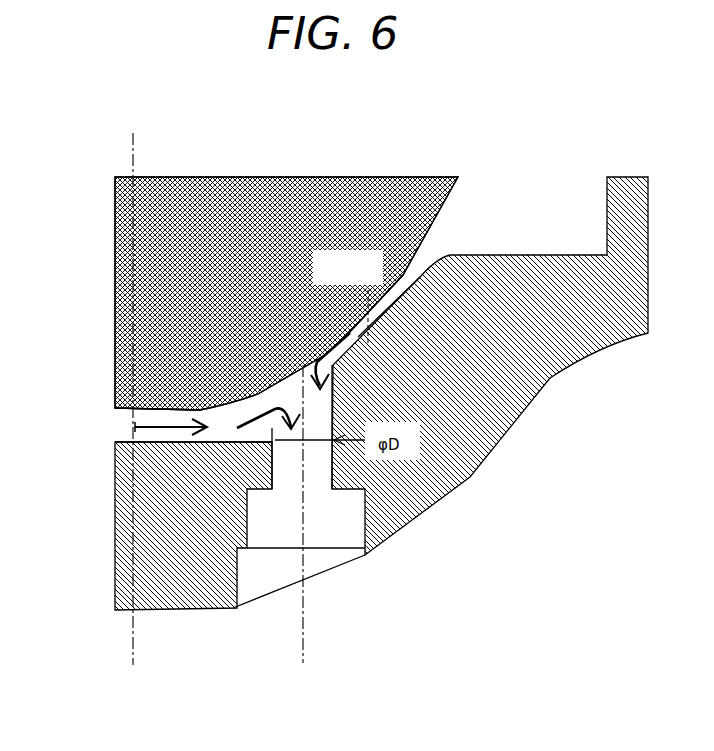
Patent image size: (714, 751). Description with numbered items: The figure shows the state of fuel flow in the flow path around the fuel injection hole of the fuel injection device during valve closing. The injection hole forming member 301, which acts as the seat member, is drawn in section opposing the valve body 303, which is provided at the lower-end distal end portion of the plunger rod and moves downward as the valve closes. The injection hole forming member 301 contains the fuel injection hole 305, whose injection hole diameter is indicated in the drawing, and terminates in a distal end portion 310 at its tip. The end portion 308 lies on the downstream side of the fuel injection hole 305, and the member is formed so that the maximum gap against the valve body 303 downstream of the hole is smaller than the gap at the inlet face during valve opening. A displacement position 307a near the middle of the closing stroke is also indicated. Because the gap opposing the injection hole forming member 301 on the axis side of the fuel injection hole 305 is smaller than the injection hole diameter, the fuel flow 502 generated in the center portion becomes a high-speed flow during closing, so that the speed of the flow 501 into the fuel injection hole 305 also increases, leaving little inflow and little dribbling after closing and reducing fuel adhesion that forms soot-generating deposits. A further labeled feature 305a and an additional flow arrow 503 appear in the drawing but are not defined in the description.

The injection hole forming member 301 is at (540, 387).
The valve body 303 is at (186, 222).
The fuel injection hole 305 is at (273, 455).
The nozzle passage (diameter D) 305a is at (316, 565).
The displacement position 307a is at (367, 302).
The end portion 308 is at (278, 424).
The distal end portion 310 is at (128, 432).
The flow 501 is at (290, 415).
The fuel flow 502 is at (173, 418).
The flow of fluid through slit opening 503 is at (335, 338).